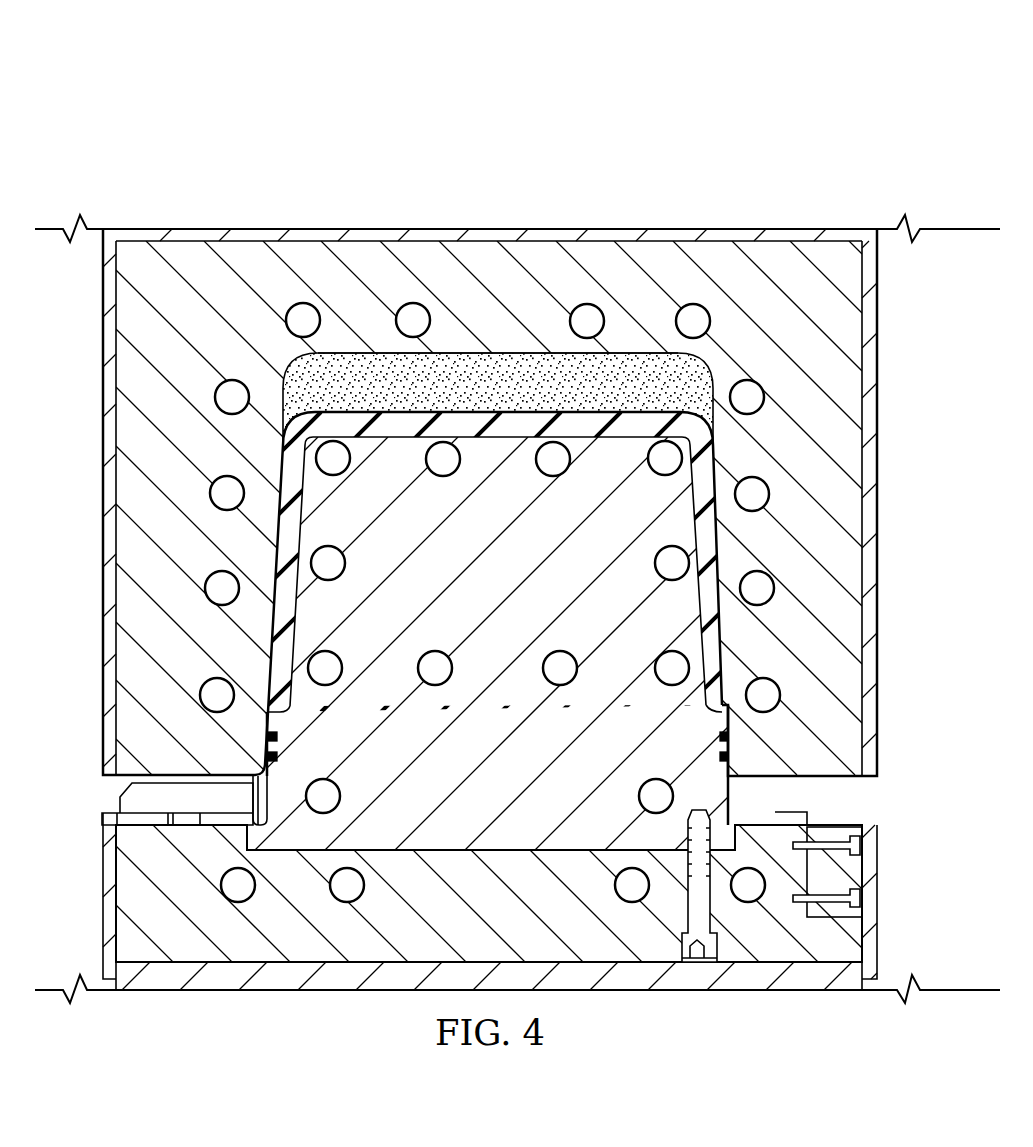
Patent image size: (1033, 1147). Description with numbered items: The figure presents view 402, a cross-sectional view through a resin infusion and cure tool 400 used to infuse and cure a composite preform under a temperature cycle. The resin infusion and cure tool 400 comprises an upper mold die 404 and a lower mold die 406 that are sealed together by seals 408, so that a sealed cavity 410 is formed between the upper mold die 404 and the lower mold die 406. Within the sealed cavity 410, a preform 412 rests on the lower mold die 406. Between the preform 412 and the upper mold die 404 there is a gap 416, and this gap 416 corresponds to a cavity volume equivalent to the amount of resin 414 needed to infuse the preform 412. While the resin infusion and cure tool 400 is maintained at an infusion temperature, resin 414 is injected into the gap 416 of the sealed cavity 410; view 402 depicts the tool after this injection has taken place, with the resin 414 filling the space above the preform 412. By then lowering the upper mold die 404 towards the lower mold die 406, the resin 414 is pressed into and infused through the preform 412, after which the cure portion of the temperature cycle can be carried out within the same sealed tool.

The resin infusion and cure tool 400 is at (357, 195).
The view 402 is at (362, 72).
The upper mold die 404 is at (718, 241).
The lower mold die 406 is at (529, 616).
The seals 408 is at (728, 757).
The sealed cavity 410 is at (620, 345).
The preform 412 is at (500, 427).
The resin 414 is at (530, 355).
The gap 416 is at (603, 392).